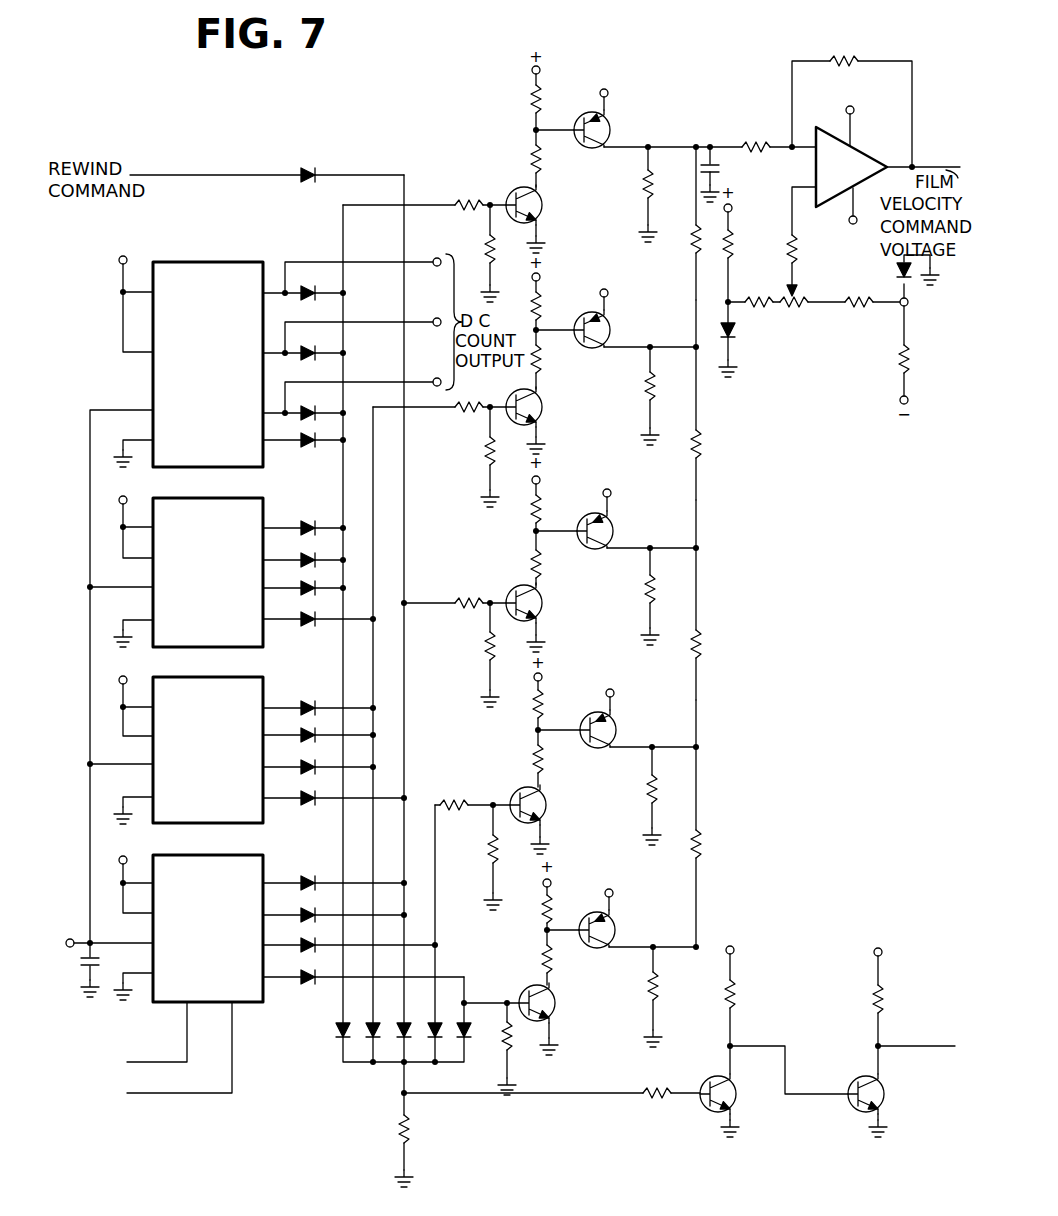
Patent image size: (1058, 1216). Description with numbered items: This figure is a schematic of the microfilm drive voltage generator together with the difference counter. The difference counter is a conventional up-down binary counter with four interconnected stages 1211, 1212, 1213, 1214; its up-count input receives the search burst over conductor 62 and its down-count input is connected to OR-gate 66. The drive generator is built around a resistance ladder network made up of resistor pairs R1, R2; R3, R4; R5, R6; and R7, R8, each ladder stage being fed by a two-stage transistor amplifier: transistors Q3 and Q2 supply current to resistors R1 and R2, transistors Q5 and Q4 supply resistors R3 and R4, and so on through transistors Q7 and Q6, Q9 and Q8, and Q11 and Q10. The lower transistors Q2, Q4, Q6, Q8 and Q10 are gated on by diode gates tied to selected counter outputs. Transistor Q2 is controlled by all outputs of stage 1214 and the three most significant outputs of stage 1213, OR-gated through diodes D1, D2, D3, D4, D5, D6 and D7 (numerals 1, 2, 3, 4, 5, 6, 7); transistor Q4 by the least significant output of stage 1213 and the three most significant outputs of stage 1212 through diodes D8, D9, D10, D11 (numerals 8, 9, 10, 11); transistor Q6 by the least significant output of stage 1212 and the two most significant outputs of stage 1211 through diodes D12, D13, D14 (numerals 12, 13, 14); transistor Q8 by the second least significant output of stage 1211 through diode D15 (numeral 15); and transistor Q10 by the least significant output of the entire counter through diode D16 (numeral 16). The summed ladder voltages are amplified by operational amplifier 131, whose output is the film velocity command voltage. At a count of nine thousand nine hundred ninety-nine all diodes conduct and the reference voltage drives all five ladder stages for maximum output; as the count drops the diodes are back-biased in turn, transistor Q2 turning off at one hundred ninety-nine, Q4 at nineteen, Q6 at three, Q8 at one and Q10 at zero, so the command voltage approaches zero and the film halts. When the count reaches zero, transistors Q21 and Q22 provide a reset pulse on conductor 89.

The counter stage 1211 is at (250, 855).
The counter stage 1212 is at (248, 677).
The counter stage 1213 is at (248, 498).
The counter stage 1214 is at (234, 262).
The diode D1 1 is at (316, 288).
The diode D2 2 is at (318, 348).
The diode D3 3 is at (318, 408).
The diode D4 4 is at (288, 424).
The diode D5 5 is at (304, 520).
The diode D6 6 is at (304, 552).
The diode D7 7 is at (304, 580).
The diode D8 8 is at (304, 611).
The diode D9 9 is at (304, 701).
The diode D10 10 is at (310, 728).
The diode D11 11 is at (310, 760).
The diode D12 12 is at (310, 792).
The diode D13 13 is at (310, 876).
The diode D14 14 is at (310, 908).
The diode D15 15 is at (310, 939).
The diode D16 16 is at (310, 970).
The transistor Q2 is at (524, 188).
The transistor Q3 is at (608, 126).
The transistor Q4 is at (540, 399).
The transistor Q5 is at (608, 331).
The transistor Q6 is at (540, 604).
The transistor Q7 is at (611, 530).
The transistor Q8 is at (545, 796).
The transistor Q9 is at (611, 728).
The transistor Q10 is at (551, 1002).
The transistor Q11 is at (611, 923).
The transistor Q21 is at (712, 1124).
The transistor Q22 is at (862, 1124).
The resistor R1 is at (644, 190).
The resistor R2 is at (692, 240).
The resistor R3 is at (654, 387).
The resistor R4 is at (701, 448).
The resistor R5 is at (654, 590).
The resistor R6 is at (699, 646).
The resistor R7 is at (655, 789).
The resistor R8 is at (700, 846).
The operational amplifier 131 is at (860, 140).
The conductor 62 is at (187, 1020).
The OR-gate 66 is at (233, 1049).
The conductor 89 is at (902, 1047).